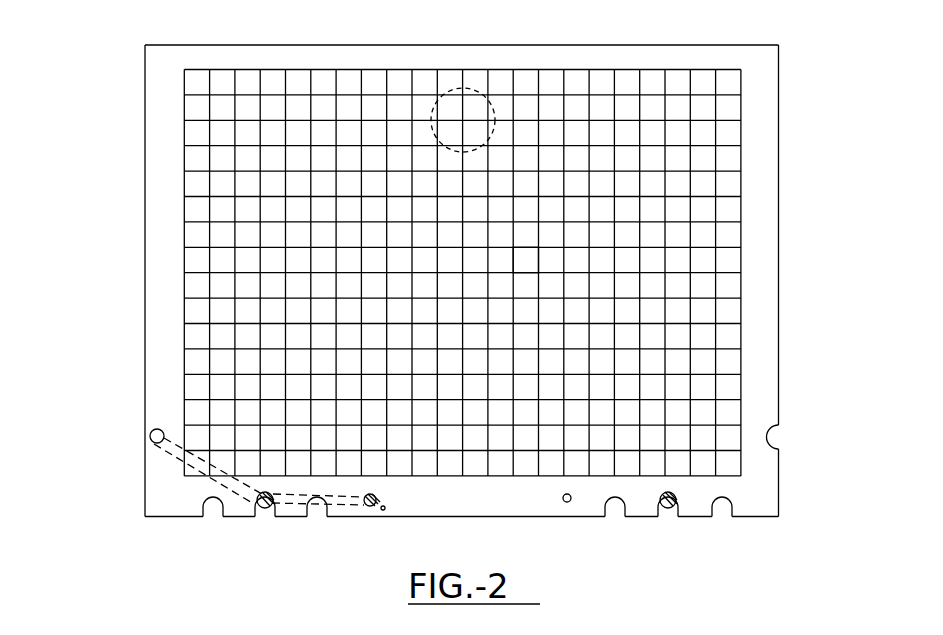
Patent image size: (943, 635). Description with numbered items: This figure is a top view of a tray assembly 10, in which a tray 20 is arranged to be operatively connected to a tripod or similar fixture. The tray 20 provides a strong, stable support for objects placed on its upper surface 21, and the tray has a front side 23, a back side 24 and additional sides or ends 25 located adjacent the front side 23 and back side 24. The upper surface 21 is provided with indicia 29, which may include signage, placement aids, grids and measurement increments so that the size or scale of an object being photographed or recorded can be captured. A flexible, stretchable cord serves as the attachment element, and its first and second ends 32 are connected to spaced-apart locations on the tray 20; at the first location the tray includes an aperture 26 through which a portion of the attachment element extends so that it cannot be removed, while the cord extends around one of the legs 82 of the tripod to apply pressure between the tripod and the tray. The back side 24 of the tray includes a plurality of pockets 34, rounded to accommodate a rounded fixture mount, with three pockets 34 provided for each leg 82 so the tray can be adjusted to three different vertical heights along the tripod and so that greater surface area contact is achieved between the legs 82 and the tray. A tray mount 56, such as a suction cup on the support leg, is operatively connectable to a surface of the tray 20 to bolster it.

The tray assembly 10 is at (118, 352).
The tray 20 is at (133, 124).
The upper surface 21 is at (225, 270).
The front side 23 is at (420, 45).
The back side 24 is at (470, 516).
The sides or ends 25 is at (145, 285).
The aperture 26 is at (382, 508).
The indicia 29 is at (535, 260).
The end of attachment element 32 is at (150, 438).
The pockets 34 is at (268, 511).
The tray mount 56 is at (476, 92).
The legs 82 is at (280, 515).